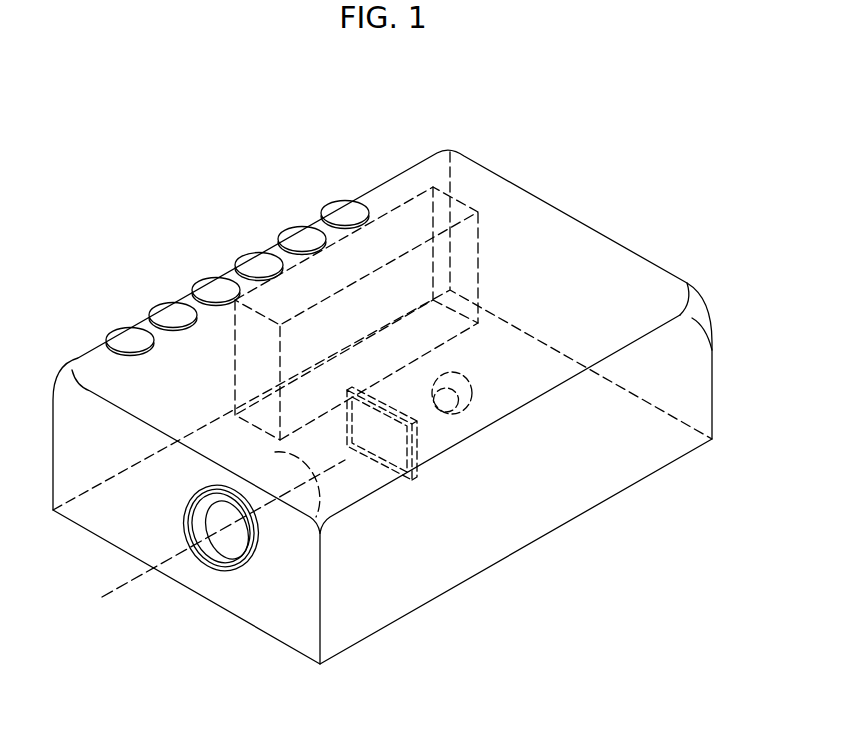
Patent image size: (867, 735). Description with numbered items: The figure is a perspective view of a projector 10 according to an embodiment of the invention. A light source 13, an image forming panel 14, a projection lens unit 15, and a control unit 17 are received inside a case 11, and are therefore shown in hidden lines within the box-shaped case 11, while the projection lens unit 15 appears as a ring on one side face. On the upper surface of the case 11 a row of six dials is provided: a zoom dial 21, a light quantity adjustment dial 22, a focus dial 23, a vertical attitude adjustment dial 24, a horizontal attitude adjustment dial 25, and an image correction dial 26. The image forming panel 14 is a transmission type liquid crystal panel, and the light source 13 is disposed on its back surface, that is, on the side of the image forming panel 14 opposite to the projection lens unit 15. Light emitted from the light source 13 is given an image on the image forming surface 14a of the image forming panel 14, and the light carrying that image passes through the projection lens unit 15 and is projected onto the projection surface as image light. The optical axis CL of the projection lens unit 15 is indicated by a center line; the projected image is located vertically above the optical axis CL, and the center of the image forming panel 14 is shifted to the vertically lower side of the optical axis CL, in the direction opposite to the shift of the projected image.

The projector 10 is at (632, 222).
The case 11 is at (551, 220).
The light source 13 is at (467, 379).
The image forming panel 14 is at (428, 456).
The image forming surface 14a is at (383, 461).
The projection lens unit 15 is at (215, 562).
The control unit 17 is at (458, 202).
The zoom dial 21 is at (125, 338).
The light quantity adjustment dial 22 is at (168, 313).
The focus dial 23 is at (211, 288).
The vertical attitude adjustment dial 24 is at (254, 263).
The horizontal attitude adjustment dial 25 is at (297, 237).
The image correction dial 26 is at (340, 211).
The optical axis CL is at (117, 587).